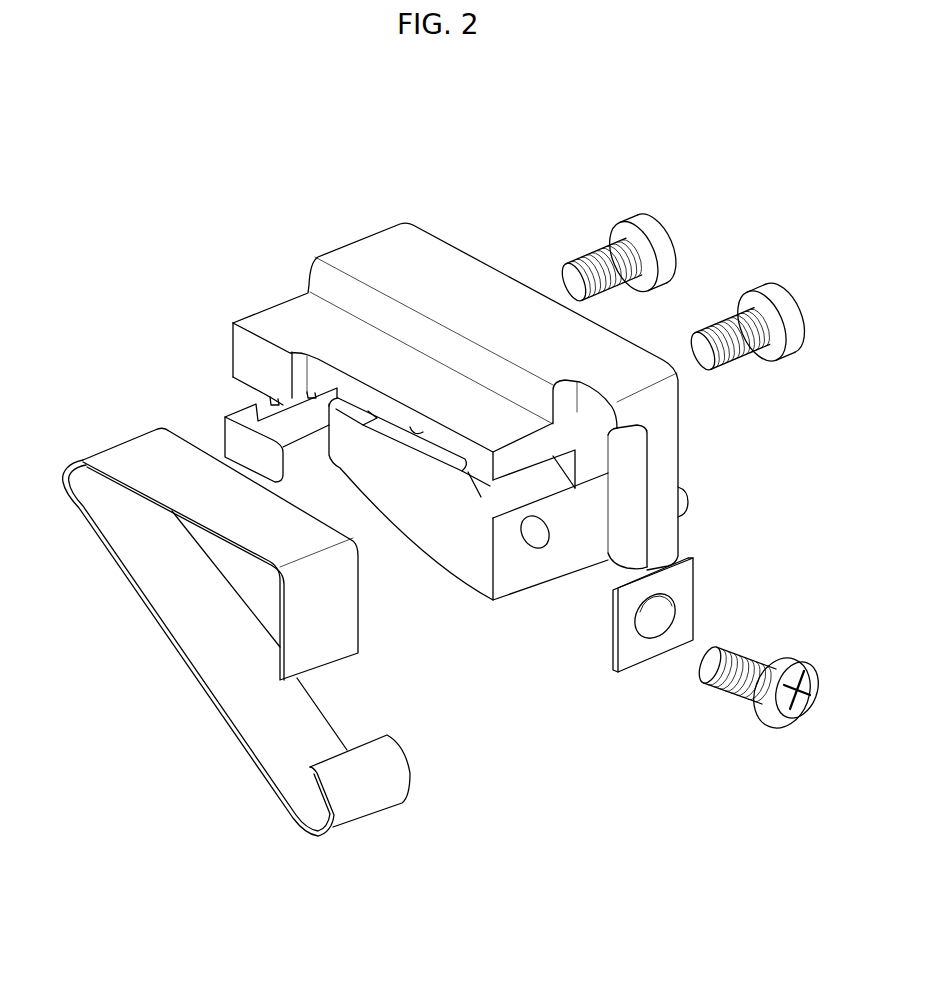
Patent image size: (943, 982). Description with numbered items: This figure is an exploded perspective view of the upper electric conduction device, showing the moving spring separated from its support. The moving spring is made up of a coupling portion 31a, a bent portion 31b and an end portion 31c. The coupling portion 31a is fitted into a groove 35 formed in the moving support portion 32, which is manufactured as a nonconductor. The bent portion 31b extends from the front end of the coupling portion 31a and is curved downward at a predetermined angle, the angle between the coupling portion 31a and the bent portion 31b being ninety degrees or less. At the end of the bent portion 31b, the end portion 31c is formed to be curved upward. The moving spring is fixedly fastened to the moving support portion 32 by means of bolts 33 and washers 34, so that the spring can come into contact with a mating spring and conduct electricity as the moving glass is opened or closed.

The coupling portion 31a is at (197, 480).
The bent portion 31b is at (193, 637).
The end portion 31c is at (334, 830).
The moving support portion 32 is at (437, 272).
The bolts 33 is at (738, 360).
The washers 34 is at (627, 650).
The groove 35 is at (418, 440).